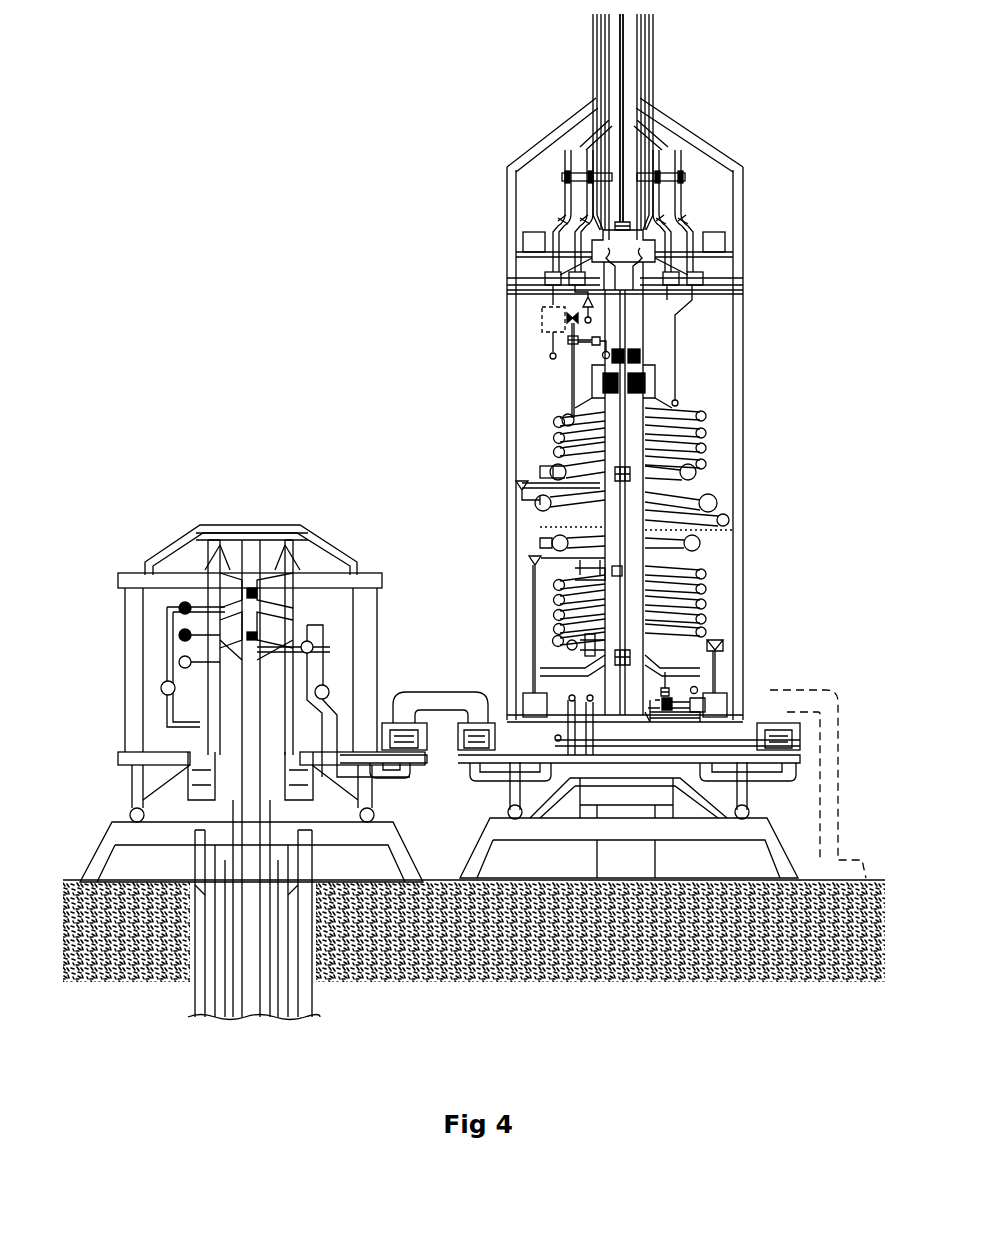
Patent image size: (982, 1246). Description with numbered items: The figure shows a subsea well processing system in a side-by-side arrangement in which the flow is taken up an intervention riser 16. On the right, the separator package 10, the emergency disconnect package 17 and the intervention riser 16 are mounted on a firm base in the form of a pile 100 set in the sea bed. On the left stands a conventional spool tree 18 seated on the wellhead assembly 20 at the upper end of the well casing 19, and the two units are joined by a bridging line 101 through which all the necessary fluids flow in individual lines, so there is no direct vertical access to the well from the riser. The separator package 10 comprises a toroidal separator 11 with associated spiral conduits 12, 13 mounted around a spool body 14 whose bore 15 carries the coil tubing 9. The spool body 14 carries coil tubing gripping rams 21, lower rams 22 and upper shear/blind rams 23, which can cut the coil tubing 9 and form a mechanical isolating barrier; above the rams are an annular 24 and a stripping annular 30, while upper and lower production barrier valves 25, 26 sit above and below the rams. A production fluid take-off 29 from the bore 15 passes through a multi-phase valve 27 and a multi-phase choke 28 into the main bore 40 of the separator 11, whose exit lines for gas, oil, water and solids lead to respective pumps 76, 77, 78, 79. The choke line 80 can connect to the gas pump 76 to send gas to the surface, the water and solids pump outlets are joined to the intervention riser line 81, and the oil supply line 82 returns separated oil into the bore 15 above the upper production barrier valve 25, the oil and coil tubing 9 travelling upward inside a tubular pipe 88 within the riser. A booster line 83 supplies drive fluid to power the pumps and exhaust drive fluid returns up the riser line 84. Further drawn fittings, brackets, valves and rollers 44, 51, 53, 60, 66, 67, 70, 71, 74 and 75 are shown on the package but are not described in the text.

The coil tubing 9 is at (628, 556).
The separator package 10 is at (857, 290).
The toroidal separator 11 is at (718, 500).
The spiral conduit 12 is at (698, 444).
The spiral conduit 13 is at (700, 576).
The spool body 14 is at (690, 524).
The bore 15 is at (628, 405).
The intervention riser 16 is at (608, 82).
The emergency disconnect package 17 is at (775, 172).
The spool tree 18 is at (58, 528).
The casing 19 is at (312, 917).
The wellhead assembly 20 is at (187, 862).
The coil tubing gripping rams 21 is at (605, 661).
The lower rams 22 is at (600, 656).
The upper shear/blind rams 23 is at (587, 623).
The annular 24 is at (603, 383).
The upper production barrier valve 25 is at (690, 471).
The lower production barrier valve 26 is at (666, 683).
The multi-phase valve 27 is at (596, 489).
The multi-phase choke 28 is at (517, 481).
The production fluid take-off 29 is at (607, 483).
The stripping annular 30 is at (640, 357).
The main bore of the separator 40 is at (535, 506).
The bracket 44 is at (552, 470).
The control valve 51 is at (565, 323).
The coupling 53 is at (553, 340).
The roller 60 is at (545, 541).
The support 66 is at (600, 573).
The valve 67 is at (526, 557).
The connector 70 is at (694, 691).
The fitting 71 is at (690, 720).
The guide block 74 is at (590, 647).
The valve 75 is at (724, 643).
The gas pump 76 is at (540, 323).
The oil pump 77 is at (525, 700).
The water pump 78 is at (702, 709).
The solids pump 79 is at (728, 701).
The choke line 80 is at (572, 148).
The intervention riser line 81 is at (682, 163).
The oil supply line 82 is at (578, 350).
The booster line 83 is at (602, 133).
The riser line 84 is at (672, 266).
The tubular pipe 88 is at (625, 86).
The pile 100 is at (617, 866).
The bridging line 101 is at (440, 690).